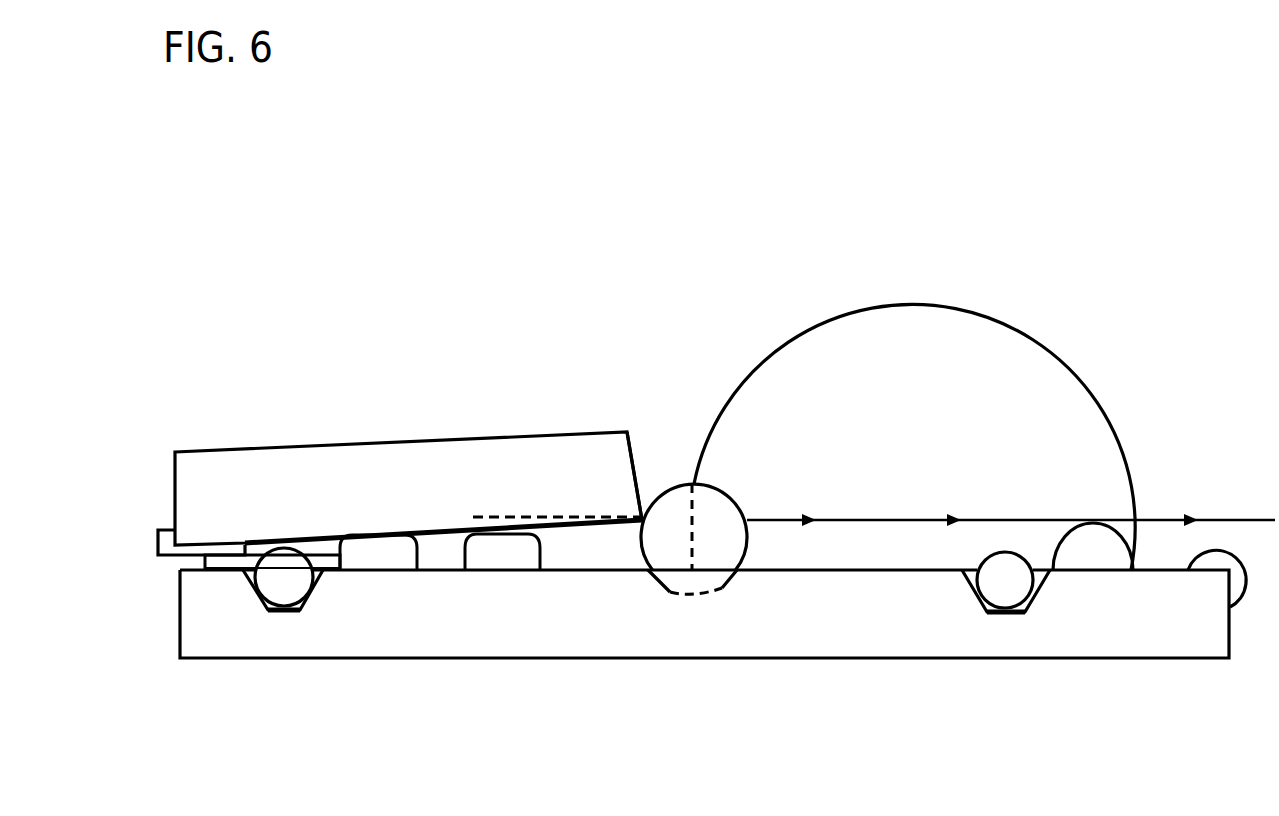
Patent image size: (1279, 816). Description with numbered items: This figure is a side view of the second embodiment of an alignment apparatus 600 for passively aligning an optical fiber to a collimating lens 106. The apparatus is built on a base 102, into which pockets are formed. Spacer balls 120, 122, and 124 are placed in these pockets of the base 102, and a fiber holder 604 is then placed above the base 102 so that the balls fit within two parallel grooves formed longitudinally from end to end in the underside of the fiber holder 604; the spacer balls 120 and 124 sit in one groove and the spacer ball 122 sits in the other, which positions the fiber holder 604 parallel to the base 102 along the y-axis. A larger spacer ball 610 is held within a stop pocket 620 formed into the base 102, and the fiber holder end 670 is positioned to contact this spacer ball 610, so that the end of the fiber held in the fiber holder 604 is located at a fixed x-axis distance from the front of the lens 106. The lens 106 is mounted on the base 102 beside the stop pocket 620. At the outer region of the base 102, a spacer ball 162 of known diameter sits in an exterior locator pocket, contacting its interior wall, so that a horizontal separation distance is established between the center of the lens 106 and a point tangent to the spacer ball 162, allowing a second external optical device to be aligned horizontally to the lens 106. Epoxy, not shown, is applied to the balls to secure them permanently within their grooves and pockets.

The alignment apparatus 600 is at (789, 222).
The base 102 is at (908, 660).
The collimating lens 106 is at (1057, 347).
The spacer ball 120 is at (193, 573).
The spacer ball 122 is at (383, 550).
The spacer ball 124 is at (493, 550).
The spacer ball 162 is at (1095, 550).
The fiber holder 604 is at (422, 440).
The spacer ball 610 is at (643, 553).
The stop pocket 620 is at (720, 596).
The fiber holder end 670 is at (630, 446).